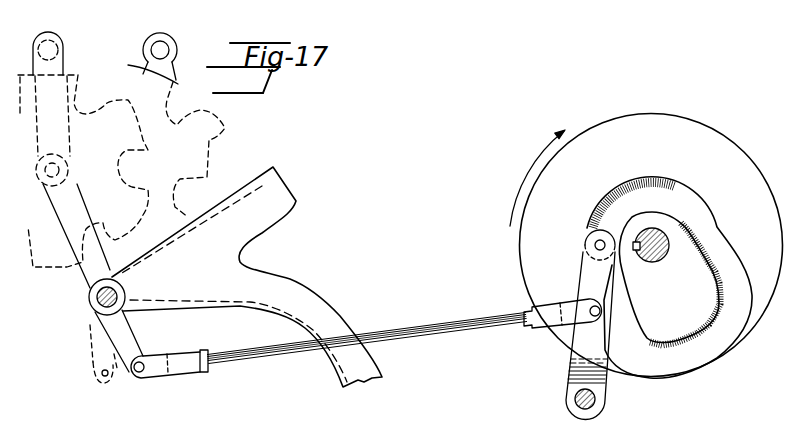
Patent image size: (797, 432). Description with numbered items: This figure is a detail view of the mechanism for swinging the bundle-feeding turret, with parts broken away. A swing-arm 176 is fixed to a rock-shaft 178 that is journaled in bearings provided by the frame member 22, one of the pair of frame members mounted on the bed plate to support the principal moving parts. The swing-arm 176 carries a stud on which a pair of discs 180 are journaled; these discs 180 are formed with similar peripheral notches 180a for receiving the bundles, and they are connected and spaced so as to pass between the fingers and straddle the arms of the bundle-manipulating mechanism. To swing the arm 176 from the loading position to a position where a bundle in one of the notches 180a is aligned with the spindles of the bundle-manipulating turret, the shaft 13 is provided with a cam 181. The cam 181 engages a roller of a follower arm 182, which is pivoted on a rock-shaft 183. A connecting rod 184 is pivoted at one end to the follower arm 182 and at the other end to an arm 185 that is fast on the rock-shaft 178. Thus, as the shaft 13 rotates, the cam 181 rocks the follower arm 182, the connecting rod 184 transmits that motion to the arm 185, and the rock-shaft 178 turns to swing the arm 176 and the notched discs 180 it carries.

The shaft 13 is at (652, 263).
The frame member 22 is at (290, 283).
The swing-arm 176 is at (68, 66).
The rock-shaft 178 is at (90, 292).
The discs 180 is at (128, 98).
The peripheral notches 180a is at (217, 119).
The cam 181 is at (716, 136).
The follower arm 182 is at (583, 341).
The rock-shaft 183 is at (597, 400).
The connecting rod 184 is at (432, 329).
The arm 185 is at (133, 342).